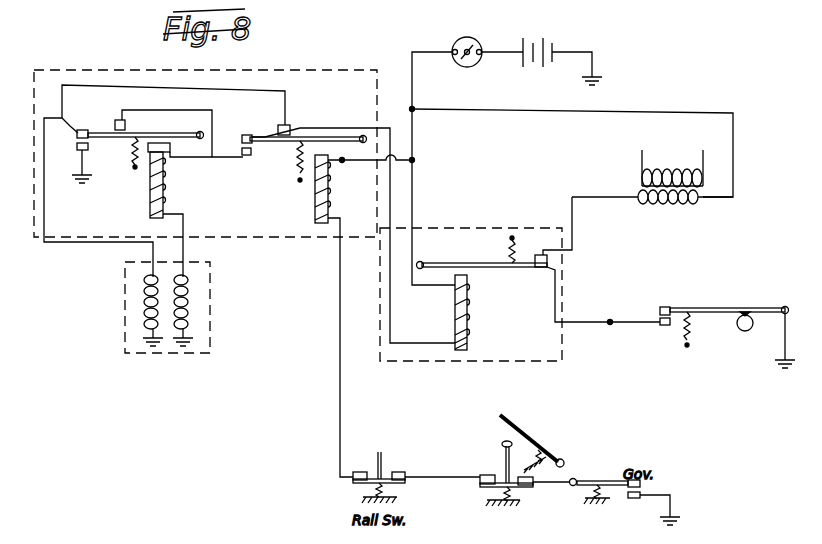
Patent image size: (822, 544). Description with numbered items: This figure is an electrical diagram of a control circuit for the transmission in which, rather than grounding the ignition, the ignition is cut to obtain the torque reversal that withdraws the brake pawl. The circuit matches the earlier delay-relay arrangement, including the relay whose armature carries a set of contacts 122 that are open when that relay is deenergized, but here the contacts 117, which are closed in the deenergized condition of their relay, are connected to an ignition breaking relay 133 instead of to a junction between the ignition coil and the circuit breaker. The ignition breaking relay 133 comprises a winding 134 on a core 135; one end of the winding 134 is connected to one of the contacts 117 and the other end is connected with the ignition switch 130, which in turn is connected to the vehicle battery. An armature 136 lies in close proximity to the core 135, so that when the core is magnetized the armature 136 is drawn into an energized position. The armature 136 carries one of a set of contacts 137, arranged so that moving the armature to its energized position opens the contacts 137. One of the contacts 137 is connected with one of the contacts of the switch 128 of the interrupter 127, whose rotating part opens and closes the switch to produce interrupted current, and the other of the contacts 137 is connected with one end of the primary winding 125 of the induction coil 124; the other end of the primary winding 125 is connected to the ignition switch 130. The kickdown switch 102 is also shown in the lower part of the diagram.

The kickdown switch 102 is at (495, 470).
The contacts 117 is at (276, 125).
The contacts 122 is at (90, 145).
The induction coil 124 is at (669, 163).
The primary winding 125 is at (670, 207).
The interrupter 127 is at (726, 331).
The switch 128 is at (657, 312).
The ignition switch 130 is at (458, 42).
The ignition breaking relay 133 is at (409, 363).
The winding 134 is at (469, 323).
The core 135 is at (463, 352).
The armature 136 is at (471, 262).
The contacts 137 is at (531, 256).